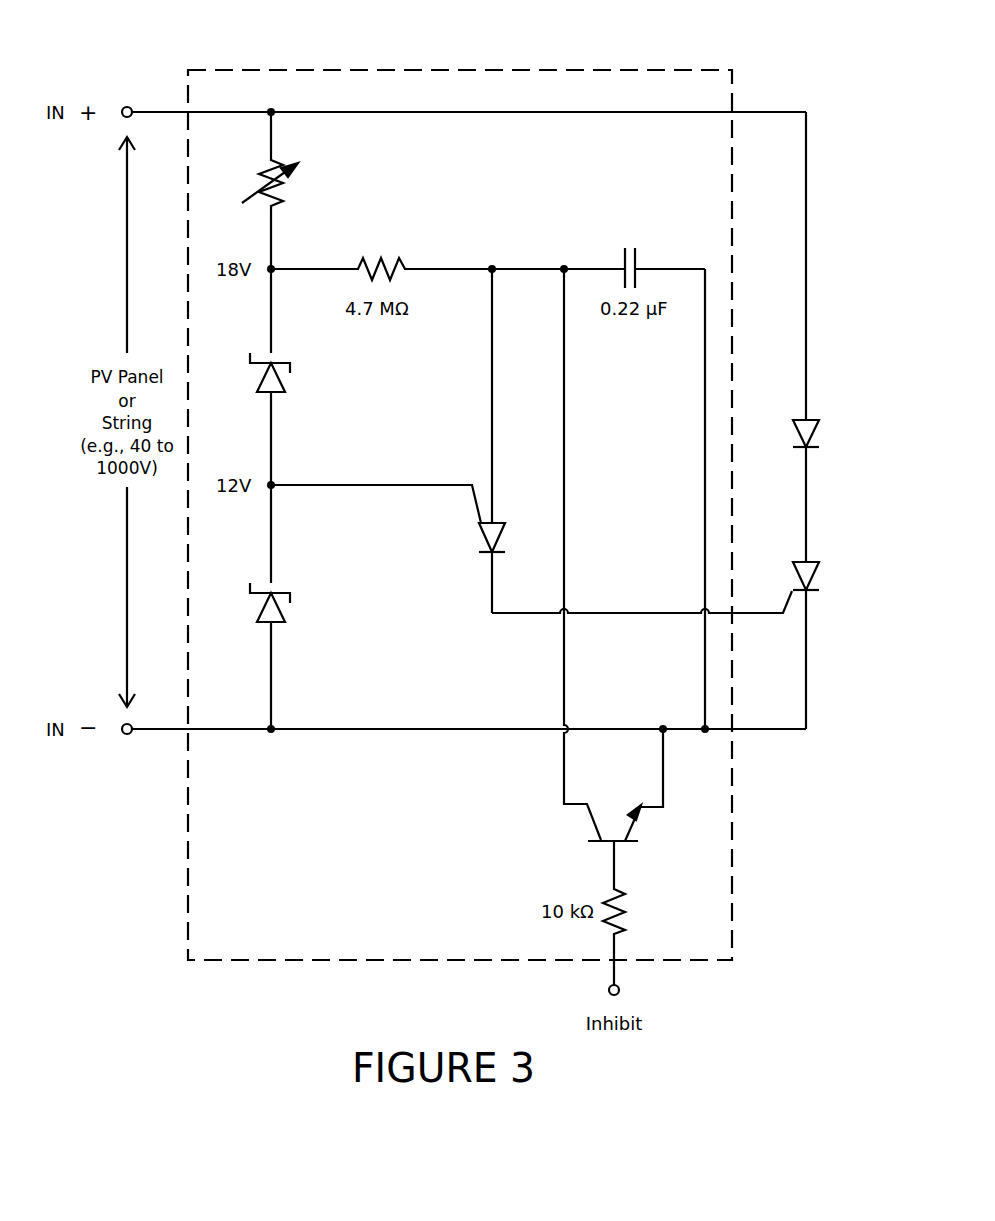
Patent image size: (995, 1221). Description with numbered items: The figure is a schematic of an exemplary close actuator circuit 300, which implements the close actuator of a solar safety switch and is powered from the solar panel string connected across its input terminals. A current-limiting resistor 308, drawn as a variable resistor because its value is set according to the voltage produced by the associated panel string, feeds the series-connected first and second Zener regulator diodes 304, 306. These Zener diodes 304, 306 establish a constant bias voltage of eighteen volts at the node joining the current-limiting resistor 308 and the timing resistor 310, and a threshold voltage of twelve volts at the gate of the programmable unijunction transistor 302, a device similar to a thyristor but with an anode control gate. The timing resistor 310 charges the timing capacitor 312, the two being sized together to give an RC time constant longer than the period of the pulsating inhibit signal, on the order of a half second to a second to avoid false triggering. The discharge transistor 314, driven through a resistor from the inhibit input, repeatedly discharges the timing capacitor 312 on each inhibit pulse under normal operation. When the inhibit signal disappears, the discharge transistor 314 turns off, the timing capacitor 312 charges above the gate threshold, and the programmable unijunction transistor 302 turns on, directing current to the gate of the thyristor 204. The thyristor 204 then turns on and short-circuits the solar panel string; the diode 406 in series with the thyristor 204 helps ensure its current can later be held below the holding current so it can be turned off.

The close actuator circuit 300 is at (460, 68).
The current-limiting resistor 308 is at (292, 190).
The timing resistor 310 is at (388, 253).
The timing capacitor 312 is at (630, 238).
The first Zener regulator diode 304 is at (297, 383).
The second Zener regulator diode 306 is at (297, 613).
The programmable unijunction transistor 302 is at (468, 542).
The diode 406 is at (828, 433).
The thyristor 204 is at (833, 573).
The discharge transistor 314 is at (580, 823).